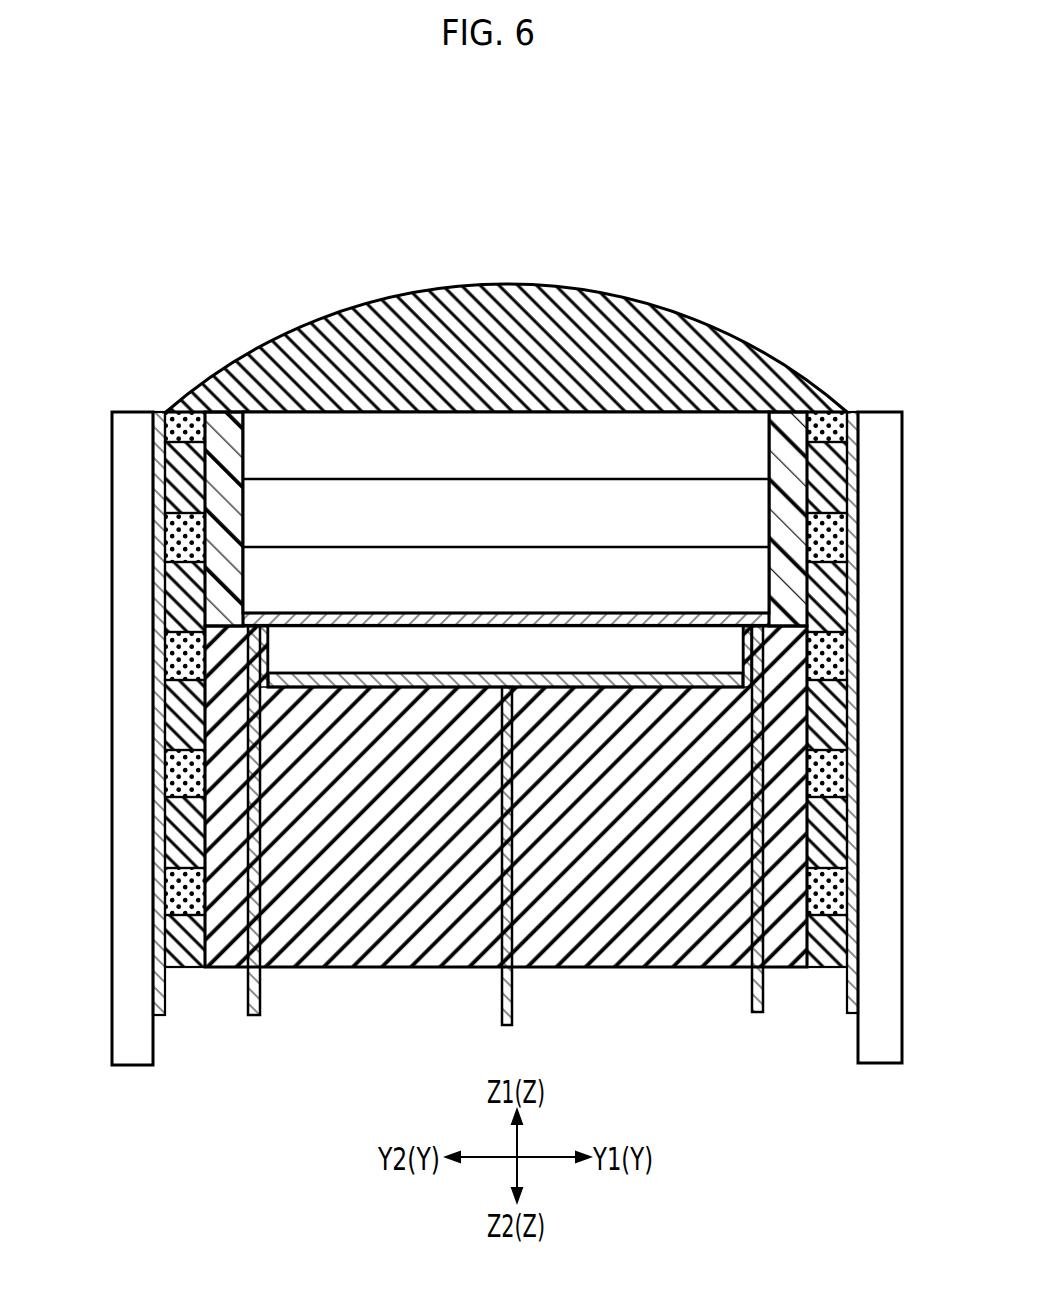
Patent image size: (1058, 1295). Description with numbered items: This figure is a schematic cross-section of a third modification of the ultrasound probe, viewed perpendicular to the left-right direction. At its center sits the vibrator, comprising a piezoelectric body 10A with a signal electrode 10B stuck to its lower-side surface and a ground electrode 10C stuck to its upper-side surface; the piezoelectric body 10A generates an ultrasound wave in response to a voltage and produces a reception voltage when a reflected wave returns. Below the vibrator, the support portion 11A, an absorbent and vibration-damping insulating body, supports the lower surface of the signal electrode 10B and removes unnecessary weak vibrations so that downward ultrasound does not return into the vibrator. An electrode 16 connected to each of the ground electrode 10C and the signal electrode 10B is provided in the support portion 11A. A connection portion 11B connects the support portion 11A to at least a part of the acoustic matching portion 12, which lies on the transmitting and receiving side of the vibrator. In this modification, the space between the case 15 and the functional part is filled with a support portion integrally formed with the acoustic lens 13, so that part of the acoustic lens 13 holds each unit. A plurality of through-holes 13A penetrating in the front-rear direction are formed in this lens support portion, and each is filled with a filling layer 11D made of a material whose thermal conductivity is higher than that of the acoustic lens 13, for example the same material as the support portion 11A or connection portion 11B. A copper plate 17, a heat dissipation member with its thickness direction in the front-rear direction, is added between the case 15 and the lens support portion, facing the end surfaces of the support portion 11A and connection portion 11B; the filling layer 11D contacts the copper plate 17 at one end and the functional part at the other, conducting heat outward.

The piezoelectric body 10A is at (278, 649).
The signal electrode 10B is at (347, 690).
The ground electrode 10C is at (205, 620).
The support portion 11A is at (663, 960).
The connection portion 11B is at (793, 612).
The filling layer 11D is at (828, 913).
The acoustic matching portion 12 is at (738, 411).
The acoustic lens 13 is at (565, 300).
The through-hole 13A is at (822, 522).
The case 15 is at (155, 1039).
The electrode 16 is at (262, 993).
The copper plate 17 is at (858, 978).